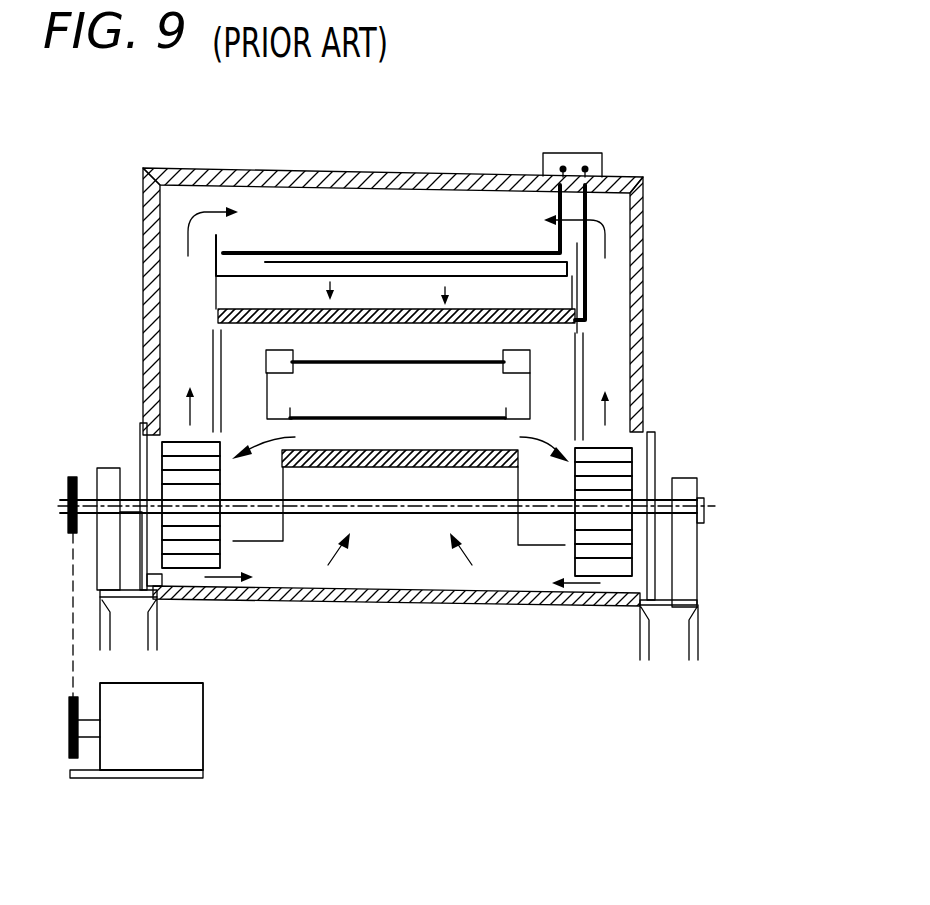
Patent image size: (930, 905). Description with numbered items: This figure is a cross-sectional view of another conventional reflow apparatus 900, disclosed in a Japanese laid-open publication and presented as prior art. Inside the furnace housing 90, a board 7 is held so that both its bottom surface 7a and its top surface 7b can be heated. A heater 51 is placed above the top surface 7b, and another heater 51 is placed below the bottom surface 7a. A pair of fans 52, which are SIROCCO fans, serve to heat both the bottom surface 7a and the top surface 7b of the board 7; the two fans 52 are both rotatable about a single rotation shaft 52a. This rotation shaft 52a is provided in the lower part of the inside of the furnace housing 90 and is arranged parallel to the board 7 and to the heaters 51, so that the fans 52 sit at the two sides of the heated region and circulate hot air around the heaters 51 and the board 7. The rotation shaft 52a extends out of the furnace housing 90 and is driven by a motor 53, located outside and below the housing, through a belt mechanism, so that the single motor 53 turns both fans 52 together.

The reflow apparatus 900 is at (635, 68).
The furnace housing 90 is at (645, 336).
The heater 51 is at (497, 455).
The fan 52 is at (183, 462).
The rotation shaft 52a is at (660, 522).
The motor 53 is at (170, 737).
The board 7 is at (427, 365).
The bottom surface 7a is at (362, 365).
The top surface 7b is at (382, 359).